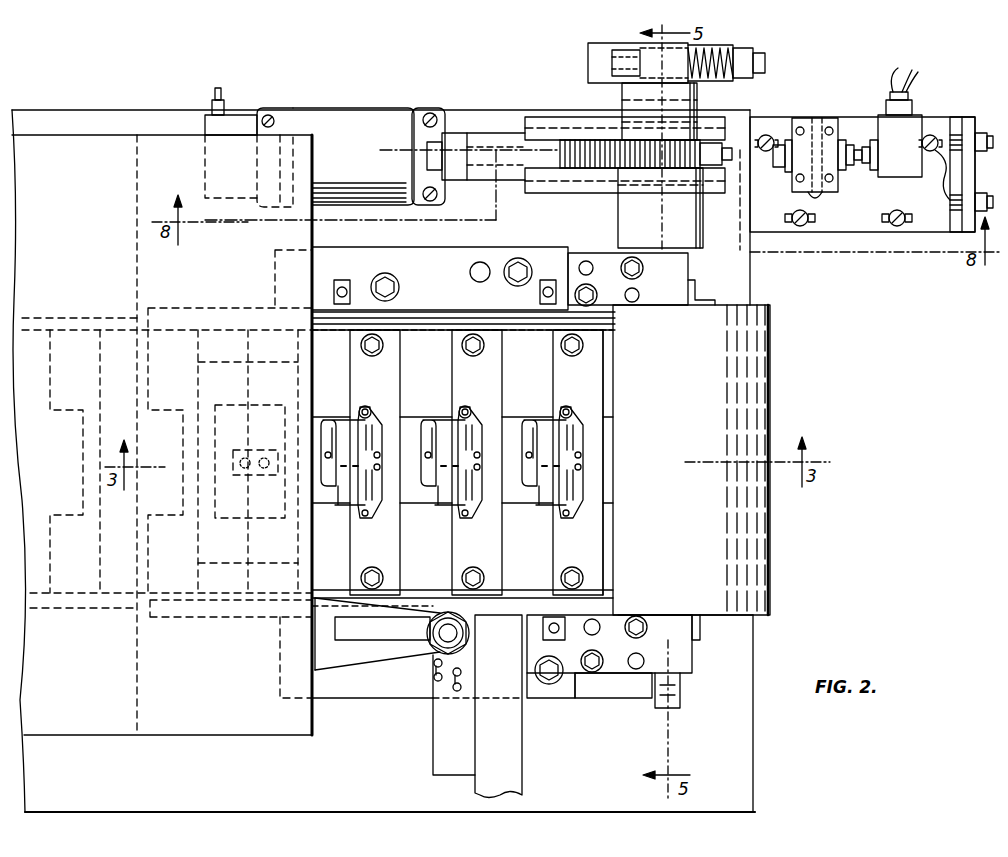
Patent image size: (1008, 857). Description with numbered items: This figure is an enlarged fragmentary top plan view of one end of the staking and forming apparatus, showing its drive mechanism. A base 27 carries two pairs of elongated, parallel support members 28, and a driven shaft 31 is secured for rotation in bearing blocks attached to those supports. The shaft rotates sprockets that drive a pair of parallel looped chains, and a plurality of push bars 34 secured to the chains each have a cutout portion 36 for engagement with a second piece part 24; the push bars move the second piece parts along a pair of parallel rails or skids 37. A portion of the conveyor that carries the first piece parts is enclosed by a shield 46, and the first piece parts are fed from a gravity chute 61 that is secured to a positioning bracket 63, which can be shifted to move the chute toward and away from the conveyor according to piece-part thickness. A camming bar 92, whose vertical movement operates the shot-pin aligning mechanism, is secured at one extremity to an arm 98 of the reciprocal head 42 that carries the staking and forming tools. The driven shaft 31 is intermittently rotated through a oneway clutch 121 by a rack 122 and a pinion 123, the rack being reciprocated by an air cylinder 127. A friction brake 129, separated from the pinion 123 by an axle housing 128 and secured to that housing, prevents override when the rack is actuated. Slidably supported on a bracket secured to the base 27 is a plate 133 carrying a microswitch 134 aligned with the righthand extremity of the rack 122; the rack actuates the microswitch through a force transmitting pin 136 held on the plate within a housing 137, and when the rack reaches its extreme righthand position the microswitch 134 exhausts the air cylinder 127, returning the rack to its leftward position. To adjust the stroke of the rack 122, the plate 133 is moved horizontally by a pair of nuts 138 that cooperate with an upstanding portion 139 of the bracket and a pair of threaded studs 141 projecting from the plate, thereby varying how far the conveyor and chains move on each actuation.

The second piece part 24 is at (338, 503).
The base 27 is at (755, 668).
The support members 28 is at (518, 247).
The driven shaft 31 is at (680, 700).
The push bars 34 is at (560, 337).
The cutout portion 36 is at (370, 408).
The rails or skids 37 is at (538, 378).
The head 42 is at (150, 735).
The shield 46 is at (760, 398).
The gravity chute 61 is at (505, 752).
The positioning bracket 63 is at (436, 745).
The camming bar 92 is at (452, 633).
The arm 98 is at (385, 650).
The oneway clutch 121 is at (618, 211).
The rack 122 is at (587, 155).
The pinion 123 is at (650, 165).
The air cylinder 127 is at (377, 112).
The axle housing 128 is at (700, 95).
The friction brake 129 is at (632, 60).
The plate 133 is at (822, 232).
The microswitch 134 is at (906, 118).
The force transmitting pin 136 is at (780, 162).
The housing 137 is at (825, 118).
The adjusting screw 138 is at (985, 195).
The upstanding portion 139 is at (957, 117).
The threaded studs 141 is at (950, 190).